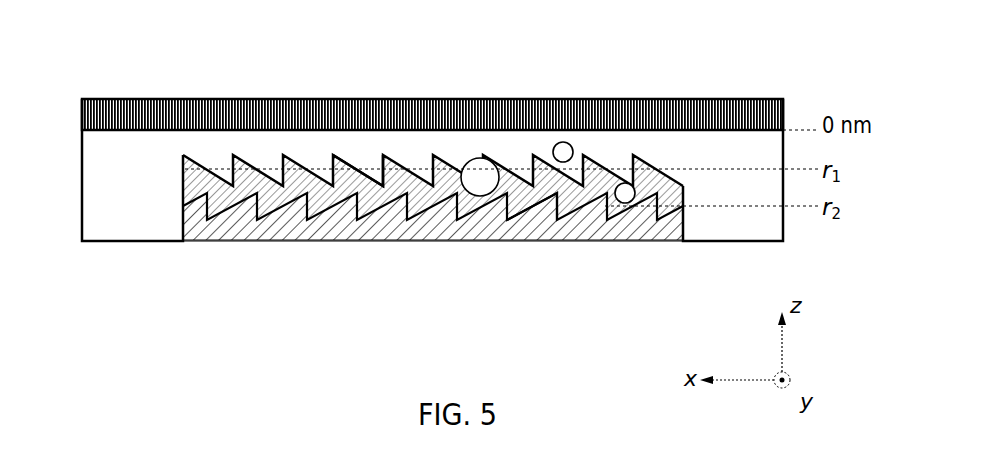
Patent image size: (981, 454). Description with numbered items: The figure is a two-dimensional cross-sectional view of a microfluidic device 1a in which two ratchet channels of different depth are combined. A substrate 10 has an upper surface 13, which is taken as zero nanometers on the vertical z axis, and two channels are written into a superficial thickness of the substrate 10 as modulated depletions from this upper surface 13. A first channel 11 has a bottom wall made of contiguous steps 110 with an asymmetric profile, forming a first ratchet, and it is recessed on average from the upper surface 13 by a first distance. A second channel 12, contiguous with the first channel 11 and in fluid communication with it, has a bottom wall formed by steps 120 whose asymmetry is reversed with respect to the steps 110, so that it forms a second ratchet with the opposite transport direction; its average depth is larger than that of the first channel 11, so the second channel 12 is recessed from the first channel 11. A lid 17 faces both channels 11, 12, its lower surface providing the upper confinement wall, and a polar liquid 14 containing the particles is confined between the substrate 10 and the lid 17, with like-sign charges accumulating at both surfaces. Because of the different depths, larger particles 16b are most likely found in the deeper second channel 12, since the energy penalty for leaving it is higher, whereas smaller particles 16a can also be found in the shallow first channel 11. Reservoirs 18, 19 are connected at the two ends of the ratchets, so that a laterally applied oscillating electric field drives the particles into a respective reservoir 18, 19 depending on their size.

The substrate 10 is at (392, 233).
The first channel 11 is at (213, 151).
The second channel 12 is at (278, 189).
The upper surface 13 is at (347, 99).
The polar liquid 14 is at (152, 163).
The smaller particles 16a is at (618, 183).
The larger particles 16b is at (470, 158).
The lid 17 is at (678, 99).
The reservoir 18 is at (125, 228).
The reservoir 19 is at (738, 232).
The microfluidic device 1a is at (227, 290).
The steps 110 is at (325, 174).
The steps 120 is at (543, 219).